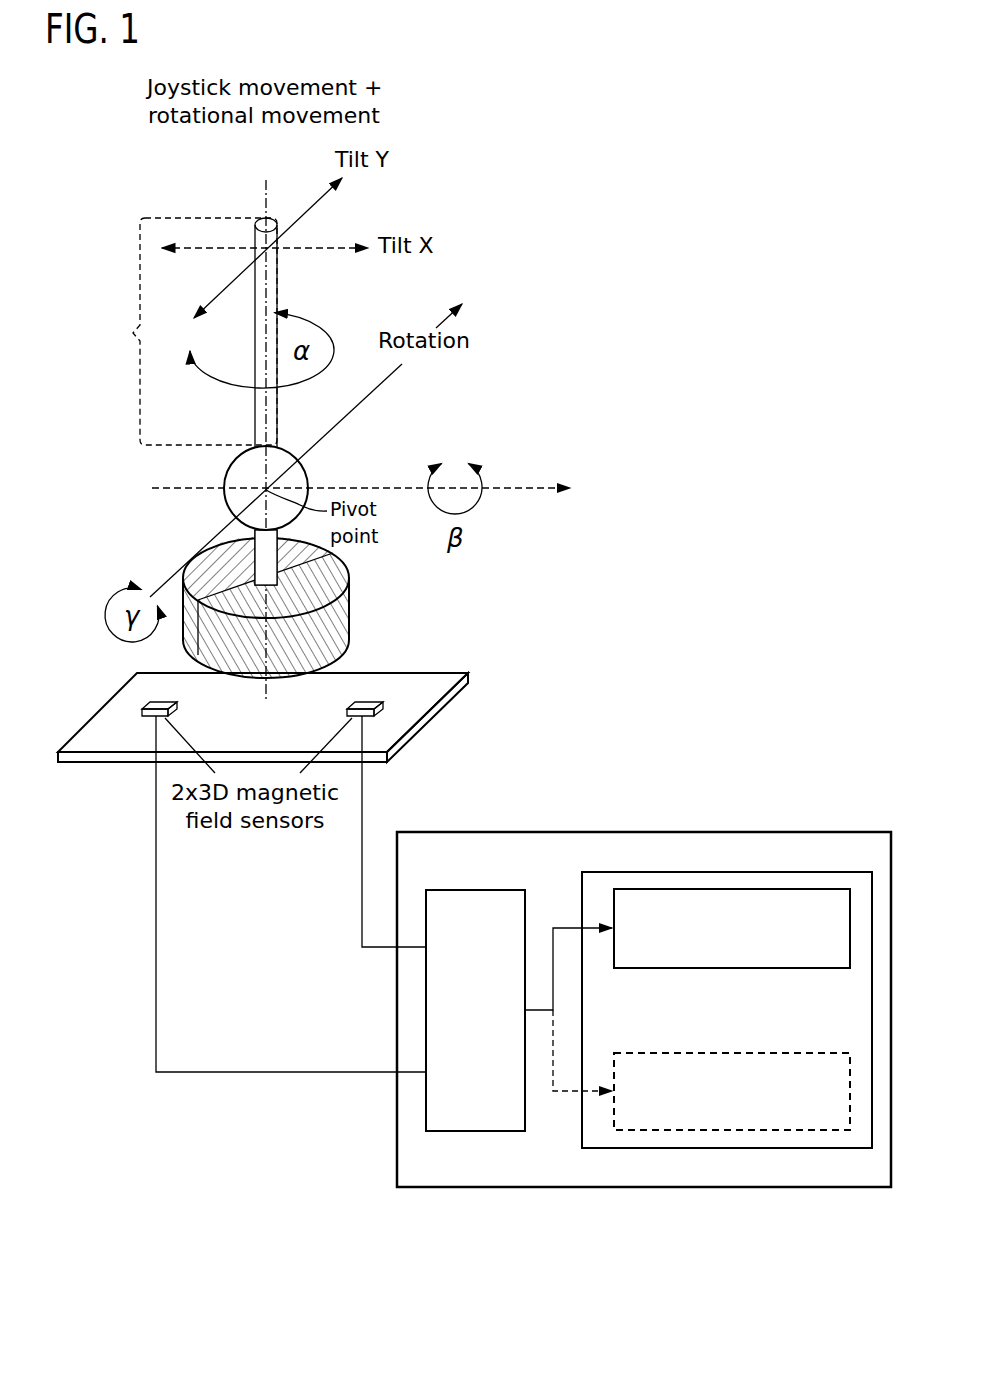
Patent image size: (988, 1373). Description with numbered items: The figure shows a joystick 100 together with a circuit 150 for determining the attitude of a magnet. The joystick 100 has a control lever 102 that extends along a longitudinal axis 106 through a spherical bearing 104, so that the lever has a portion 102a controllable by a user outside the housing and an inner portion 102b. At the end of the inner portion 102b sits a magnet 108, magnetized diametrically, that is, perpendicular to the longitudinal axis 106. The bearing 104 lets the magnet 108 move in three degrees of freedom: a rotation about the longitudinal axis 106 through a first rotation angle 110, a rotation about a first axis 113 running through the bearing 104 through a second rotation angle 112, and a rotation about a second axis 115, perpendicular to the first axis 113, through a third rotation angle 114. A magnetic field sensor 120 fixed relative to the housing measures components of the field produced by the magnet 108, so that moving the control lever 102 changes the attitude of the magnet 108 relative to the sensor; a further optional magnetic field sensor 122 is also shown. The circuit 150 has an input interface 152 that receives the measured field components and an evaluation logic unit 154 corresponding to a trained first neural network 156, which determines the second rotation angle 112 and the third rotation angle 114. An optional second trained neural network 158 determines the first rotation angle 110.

The joystick 100 is at (503, 329).
The control lever 102 is at (176, 401).
The portion controllable by a user 102a is at (176, 331).
The inner portion 102b is at (217, 535).
The bearing 104 is at (307, 471).
The longitudinal axis 106 is at (264, 186).
The magnet 108 is at (351, 606).
The first rotation angle 110 is at (317, 340).
The second rotation angle 112 is at (479, 500).
The first axis 113 is at (163, 488).
The third rotation angle 114 is at (130, 642).
The second axis 115 is at (366, 398).
The magnetic field sensor 120 is at (348, 710).
The further magnetic field sensor 122 is at (177, 710).
The circuit 150 is at (641, 832).
The input interface 152 is at (426, 1006).
The evaluation logic unit 154 is at (725, 1149).
The first neural network 156 is at (770, 969).
The second trained neural network 158 is at (660, 1052).